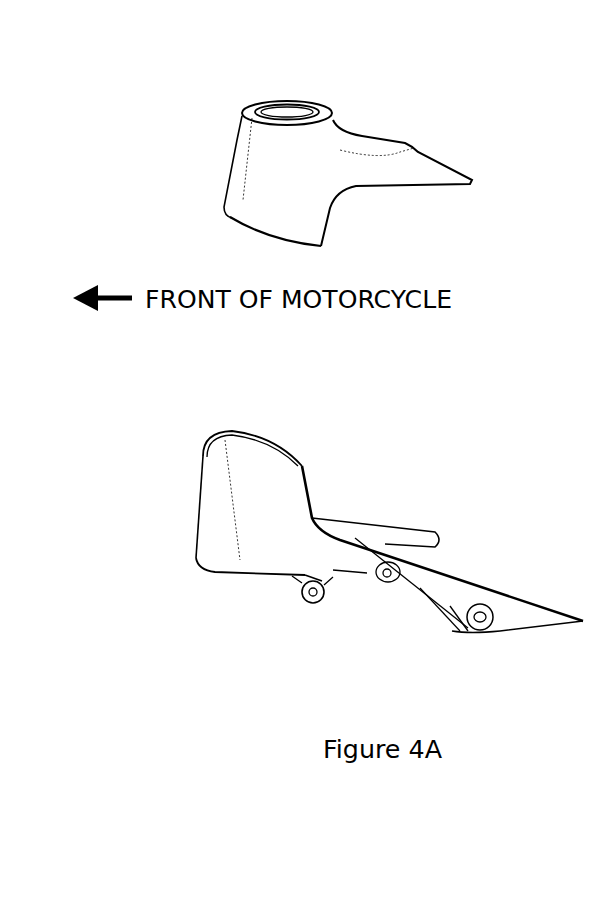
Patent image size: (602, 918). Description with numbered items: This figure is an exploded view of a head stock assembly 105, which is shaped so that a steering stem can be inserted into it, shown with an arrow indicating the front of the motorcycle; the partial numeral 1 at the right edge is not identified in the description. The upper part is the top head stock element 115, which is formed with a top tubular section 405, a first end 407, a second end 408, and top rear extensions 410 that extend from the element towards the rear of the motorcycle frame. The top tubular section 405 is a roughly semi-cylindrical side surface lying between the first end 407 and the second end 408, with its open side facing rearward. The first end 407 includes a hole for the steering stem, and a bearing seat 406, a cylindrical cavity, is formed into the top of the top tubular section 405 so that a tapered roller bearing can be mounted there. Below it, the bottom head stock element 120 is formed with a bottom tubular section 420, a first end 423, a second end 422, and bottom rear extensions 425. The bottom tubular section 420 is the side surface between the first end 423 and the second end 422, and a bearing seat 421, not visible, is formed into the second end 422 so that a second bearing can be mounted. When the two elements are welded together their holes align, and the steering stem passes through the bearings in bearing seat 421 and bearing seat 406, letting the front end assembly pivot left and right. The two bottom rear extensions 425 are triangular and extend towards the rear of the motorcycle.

The top head stock element 115 is at (297, 154).
The top tubular section 405 is at (253, 157).
The bearing seat 406 is at (302, 113).
The first end 407 is at (327, 113).
The second end 408 is at (232, 223).
The top rear extensions 410 is at (418, 175).
The motorcycle frame 1 is at (595, 248).
The bottom head stock element 120 is at (335, 496).
The bottom tubular section 420 is at (203, 455).
The first end 423 is at (242, 453).
The bearing seat 421 is at (218, 567).
The second end 422 is at (242, 582).
The bottom rear extensions 425 is at (507, 600).
The head stock assembly 105 is at (198, 733).